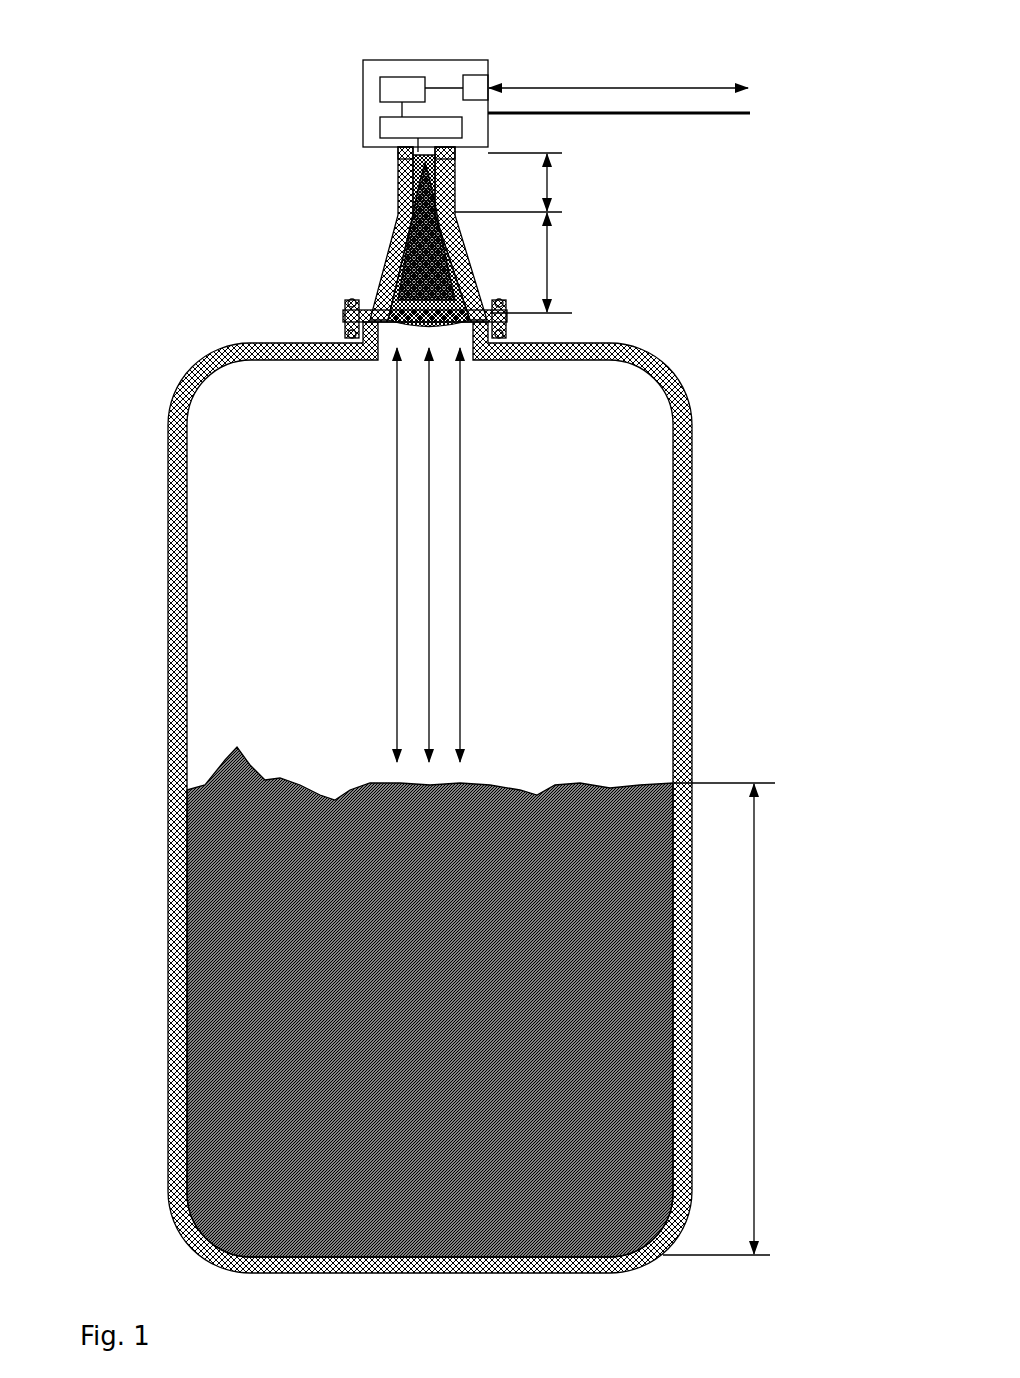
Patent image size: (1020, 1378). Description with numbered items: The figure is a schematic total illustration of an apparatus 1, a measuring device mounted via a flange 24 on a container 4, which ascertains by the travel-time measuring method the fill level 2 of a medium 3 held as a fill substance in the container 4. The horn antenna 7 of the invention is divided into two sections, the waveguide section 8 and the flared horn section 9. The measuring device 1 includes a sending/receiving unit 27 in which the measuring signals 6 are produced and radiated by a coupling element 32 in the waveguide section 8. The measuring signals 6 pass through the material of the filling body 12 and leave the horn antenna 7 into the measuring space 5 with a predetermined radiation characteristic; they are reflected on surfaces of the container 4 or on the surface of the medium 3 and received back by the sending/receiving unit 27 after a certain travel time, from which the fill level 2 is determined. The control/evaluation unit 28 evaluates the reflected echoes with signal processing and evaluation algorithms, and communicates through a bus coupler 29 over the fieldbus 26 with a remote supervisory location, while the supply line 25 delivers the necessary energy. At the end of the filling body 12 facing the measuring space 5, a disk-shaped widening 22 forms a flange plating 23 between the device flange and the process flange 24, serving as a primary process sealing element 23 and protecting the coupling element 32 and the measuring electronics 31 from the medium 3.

The apparatus 1 is at (186, 139).
The fill level 2 is at (728, 1019).
The medium 3 is at (540, 812).
The container 4 is at (657, 377).
The measuring space 5 is at (580, 442).
The measuring signals 6 is at (474, 599).
The horn antenna 7 is at (400, 226).
The waveguide section 8 is at (549, 186).
The horn section 9 is at (549, 268).
The filling body 12 is at (382, 264).
The disk-shaped widening 22 is at (331, 309).
The process sealing element 23 is at (394, 301).
The flange 24 is at (343, 322).
The supply line 25 is at (672, 114).
The fieldbus 26 is at (660, 88).
The sending/receiving unit 27 is at (380, 128).
The control/evaluation unit 28 is at (380, 85).
The bus coupler 29 is at (478, 85).
The measuring electronics 31 is at (383, 67).
The coupling element 32 is at (403, 158).